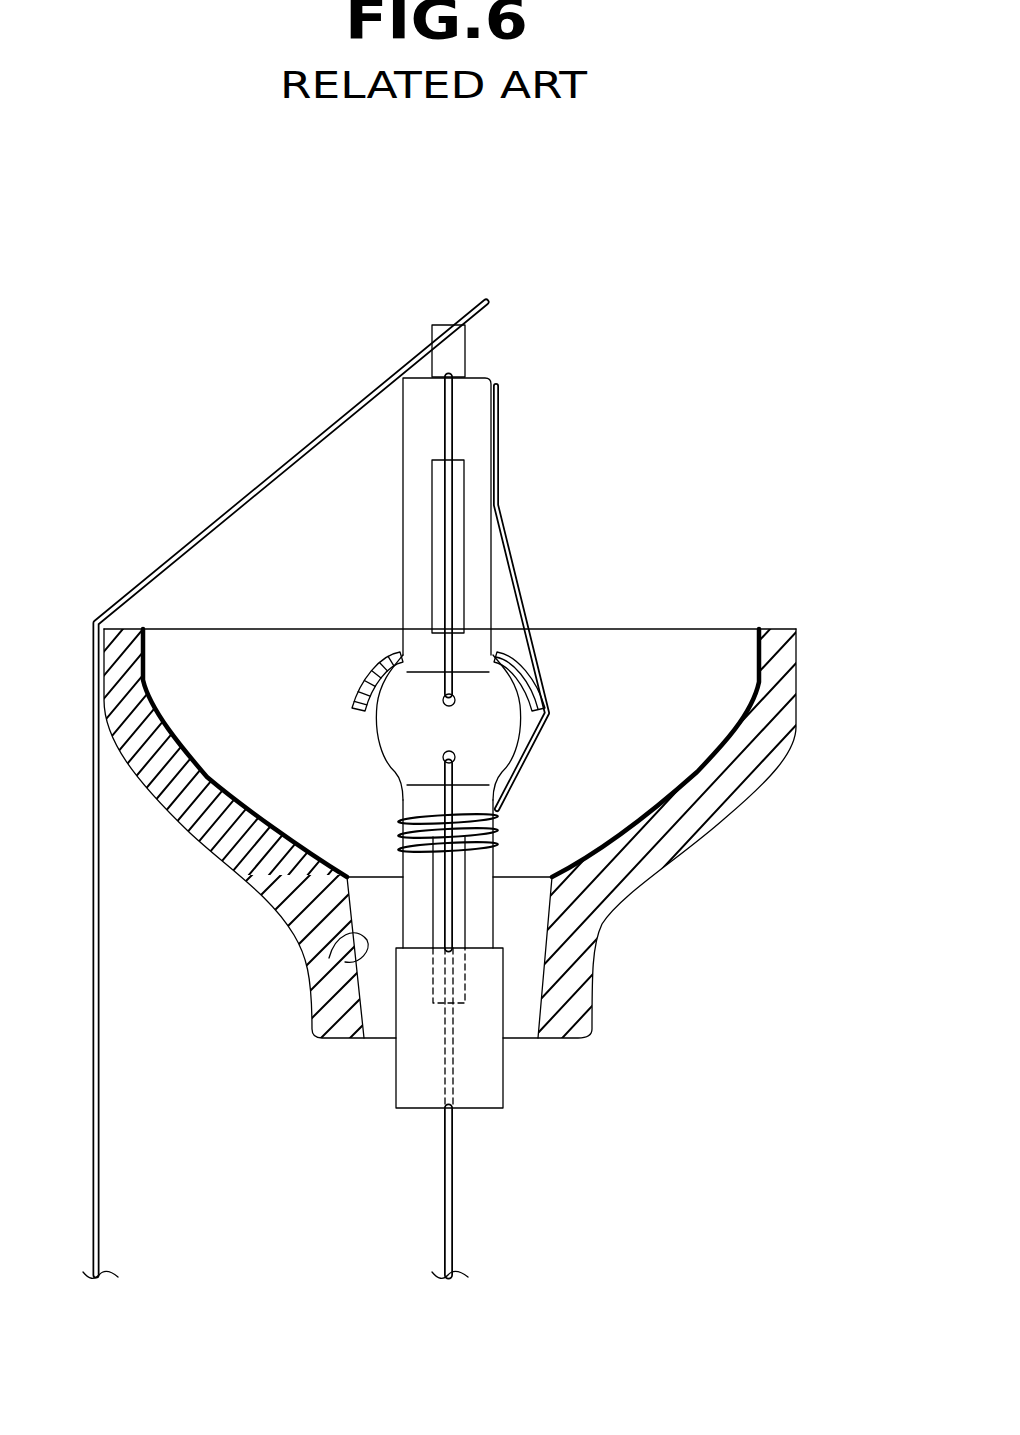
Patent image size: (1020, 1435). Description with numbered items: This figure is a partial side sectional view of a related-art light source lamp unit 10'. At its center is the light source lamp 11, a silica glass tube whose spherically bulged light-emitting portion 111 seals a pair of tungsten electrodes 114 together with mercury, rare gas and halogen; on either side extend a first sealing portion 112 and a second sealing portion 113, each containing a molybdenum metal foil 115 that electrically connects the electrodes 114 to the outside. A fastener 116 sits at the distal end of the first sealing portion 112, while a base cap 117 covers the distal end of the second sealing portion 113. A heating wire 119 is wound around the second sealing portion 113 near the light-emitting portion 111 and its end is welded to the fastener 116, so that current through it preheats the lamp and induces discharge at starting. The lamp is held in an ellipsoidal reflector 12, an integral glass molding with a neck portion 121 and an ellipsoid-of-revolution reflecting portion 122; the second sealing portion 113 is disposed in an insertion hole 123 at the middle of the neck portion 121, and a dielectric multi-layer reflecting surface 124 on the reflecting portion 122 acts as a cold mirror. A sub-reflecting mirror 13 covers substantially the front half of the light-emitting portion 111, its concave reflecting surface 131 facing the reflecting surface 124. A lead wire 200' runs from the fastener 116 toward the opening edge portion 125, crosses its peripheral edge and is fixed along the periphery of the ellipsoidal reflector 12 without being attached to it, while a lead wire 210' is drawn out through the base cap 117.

The light source lamp unit 10' is at (794, 209).
The light source lamp 11 is at (496, 663).
The light-emitting portion 111 is at (537, 735).
The first sealing portion 112 is at (482, 490).
The second sealing portion 113 is at (497, 857).
The tungsten electrodes 114 is at (443, 700).
The metal foils 115 is at (466, 474).
The fastener 116 is at (432, 325).
The base cap 117 is at (504, 1090).
The heating wire 119 is at (522, 598).
The ellipsoidal reflector 12 is at (472, 851).
The neck portion 121 is at (308, 1004).
The reflecting portion 122 is at (190, 833).
The insertion hole 123 is at (308, 954).
The reflecting surface 124 is at (717, 752).
The opening edge portion 125 is at (243, 645).
The sub-reflecting mirror 13 is at (412, 705).
The reflecting surface 131 is at (371, 710).
The lead wire 200' is at (284, 790).
The lead wire 210' is at (496, 827).